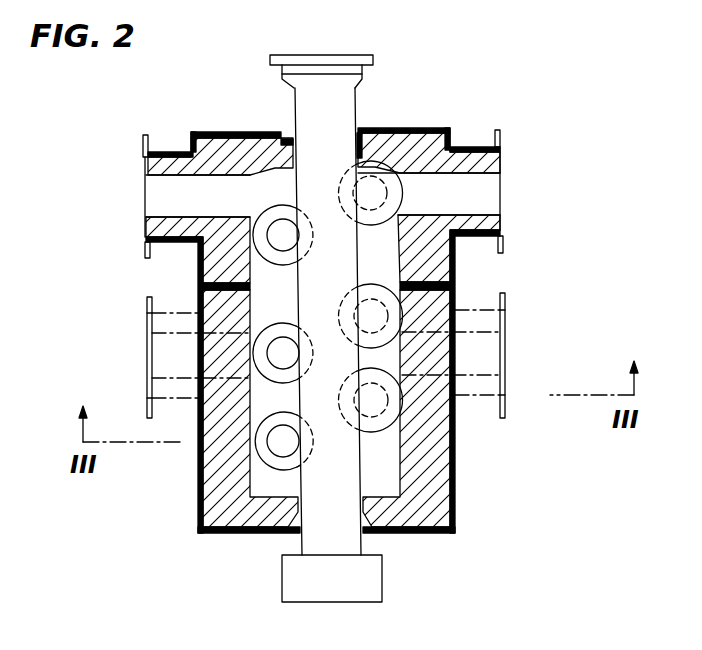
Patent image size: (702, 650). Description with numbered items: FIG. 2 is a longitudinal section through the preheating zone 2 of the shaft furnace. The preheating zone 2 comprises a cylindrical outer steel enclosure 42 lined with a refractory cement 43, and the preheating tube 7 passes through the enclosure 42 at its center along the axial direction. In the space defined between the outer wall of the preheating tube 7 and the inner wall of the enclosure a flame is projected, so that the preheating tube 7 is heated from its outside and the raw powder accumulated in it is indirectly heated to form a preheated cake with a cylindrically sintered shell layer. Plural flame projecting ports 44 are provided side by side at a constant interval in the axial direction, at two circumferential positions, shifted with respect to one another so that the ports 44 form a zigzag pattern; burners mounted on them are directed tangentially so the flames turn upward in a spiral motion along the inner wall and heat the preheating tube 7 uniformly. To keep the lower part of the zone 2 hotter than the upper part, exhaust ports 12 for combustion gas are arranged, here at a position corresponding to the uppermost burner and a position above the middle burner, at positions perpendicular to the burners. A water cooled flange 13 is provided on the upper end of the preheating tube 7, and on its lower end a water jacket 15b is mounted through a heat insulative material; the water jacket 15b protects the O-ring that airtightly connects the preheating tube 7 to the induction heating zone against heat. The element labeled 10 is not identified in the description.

The preheating zone 2 is at (515, 159).
The preheating tube 7 is at (345, 102).
The roller 10 is at (383, 316).
The exhaust port 12 is at (165, 178).
The water cooled flange 13 is at (352, 70).
The water jacket 15b is at (375, 556).
The cylindrical outer steel enclosure 42 is at (440, 128).
The refractory cement 43 is at (222, 136).
The flame projecting port 44 is at (283, 222).